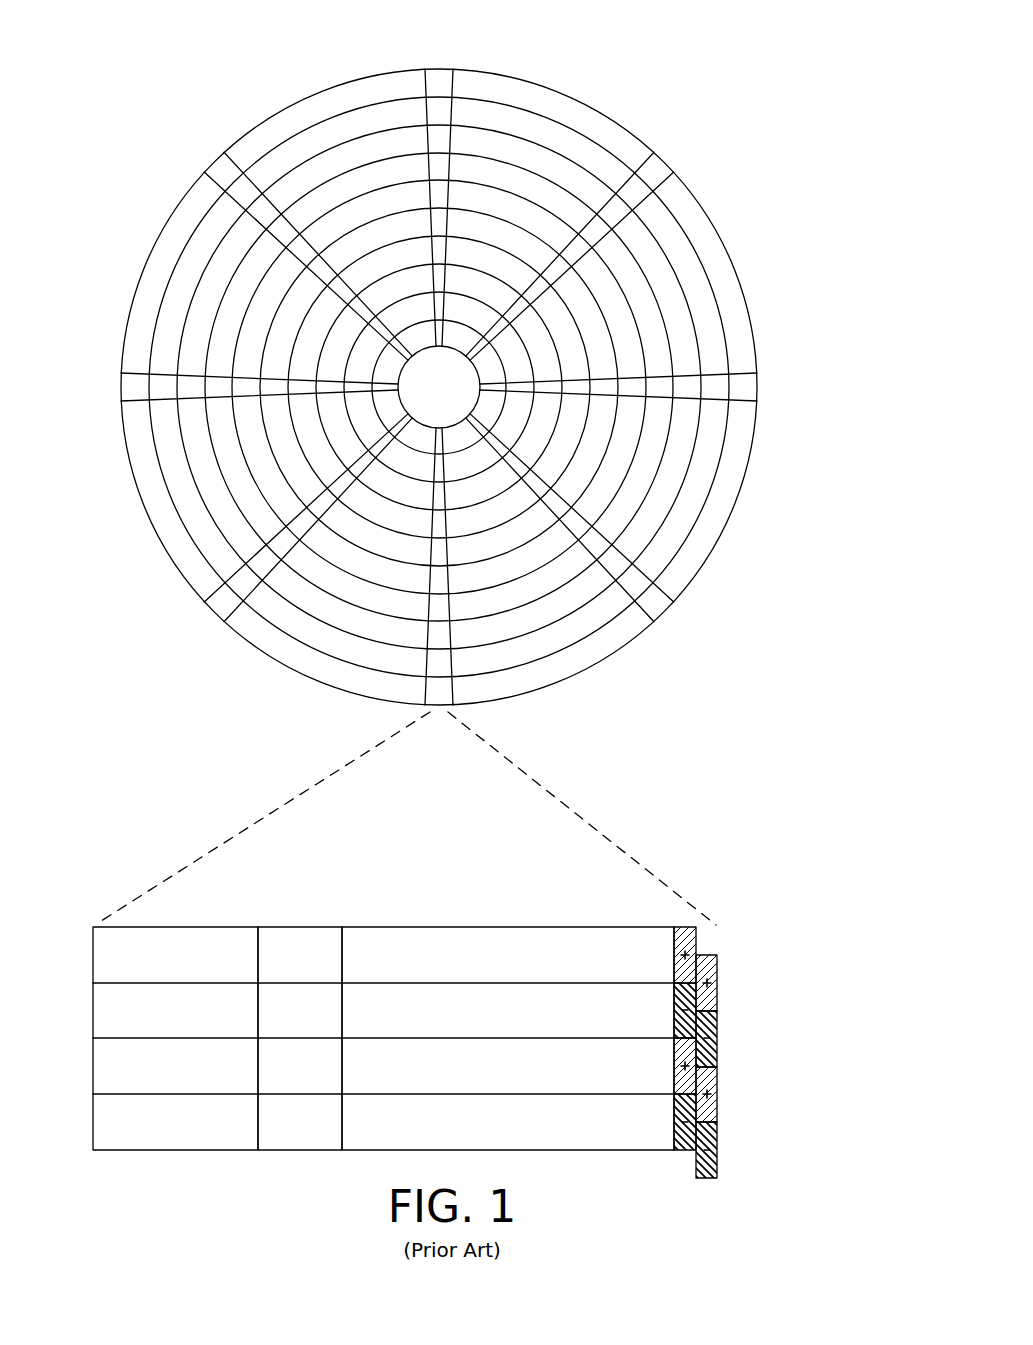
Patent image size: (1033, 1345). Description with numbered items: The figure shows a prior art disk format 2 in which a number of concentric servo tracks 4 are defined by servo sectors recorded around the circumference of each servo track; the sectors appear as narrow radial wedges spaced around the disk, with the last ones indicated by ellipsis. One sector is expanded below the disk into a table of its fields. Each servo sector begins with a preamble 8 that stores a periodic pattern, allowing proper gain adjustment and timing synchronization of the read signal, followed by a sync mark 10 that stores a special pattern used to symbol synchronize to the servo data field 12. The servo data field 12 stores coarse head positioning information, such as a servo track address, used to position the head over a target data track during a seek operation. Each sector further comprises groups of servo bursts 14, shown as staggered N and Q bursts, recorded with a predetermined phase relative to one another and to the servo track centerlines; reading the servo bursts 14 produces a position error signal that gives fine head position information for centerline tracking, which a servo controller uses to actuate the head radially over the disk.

The disk format 2 is at (198, 67).
The servo track 4 is at (548, 133).
The preamble 8 is at (185, 927).
The sync mark 10 is at (305, 927).
The servo data field 12 is at (499, 927).
The servo bursts 14 is at (723, 920).